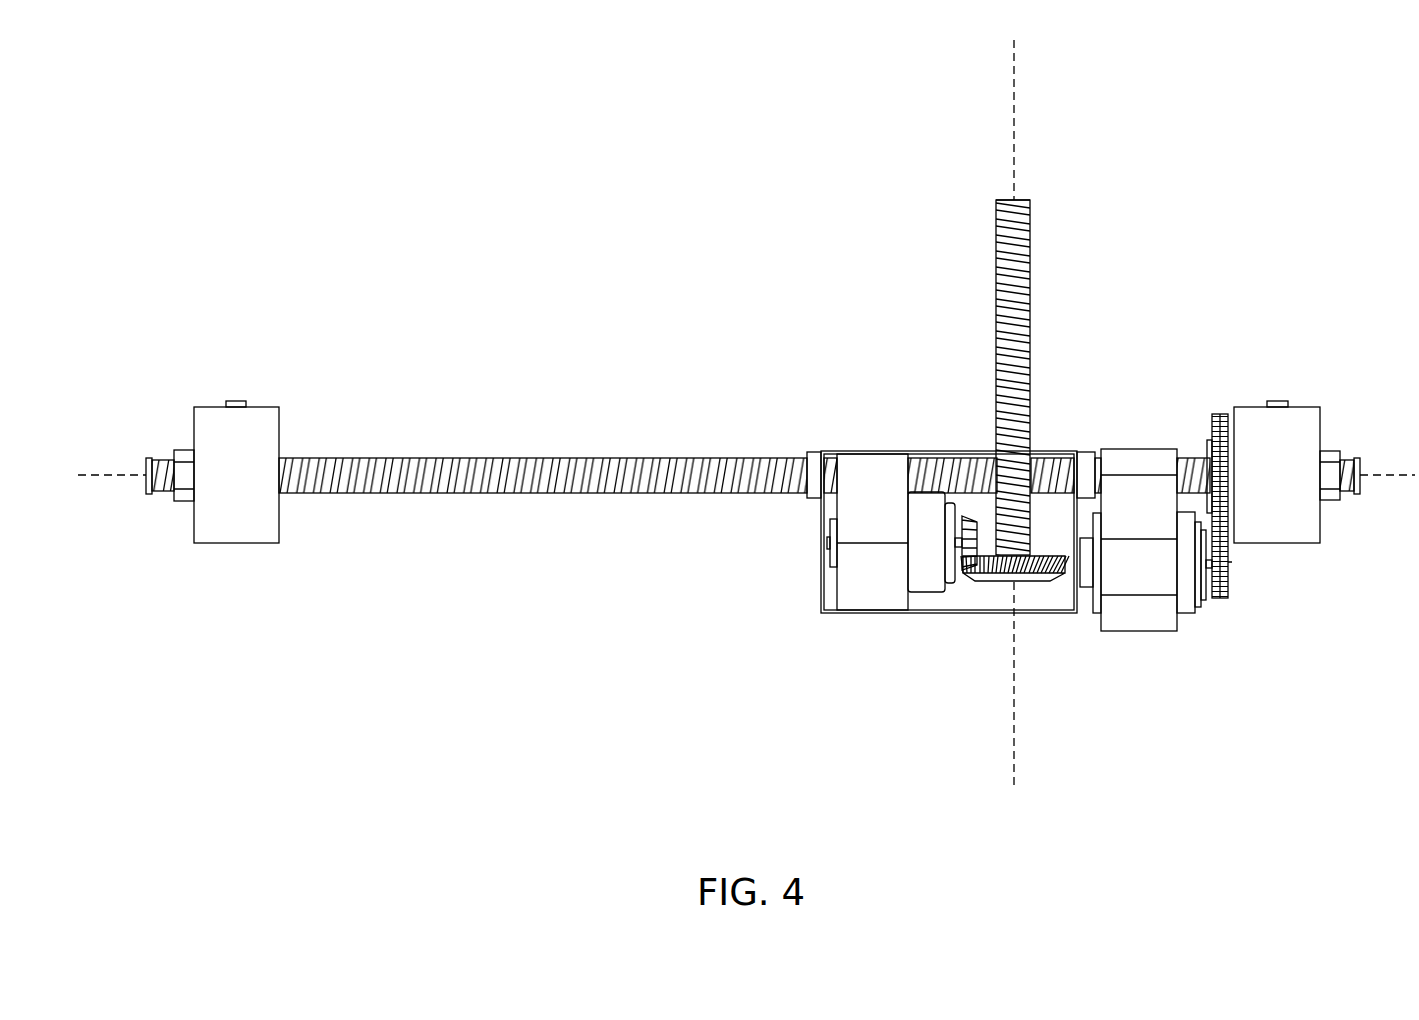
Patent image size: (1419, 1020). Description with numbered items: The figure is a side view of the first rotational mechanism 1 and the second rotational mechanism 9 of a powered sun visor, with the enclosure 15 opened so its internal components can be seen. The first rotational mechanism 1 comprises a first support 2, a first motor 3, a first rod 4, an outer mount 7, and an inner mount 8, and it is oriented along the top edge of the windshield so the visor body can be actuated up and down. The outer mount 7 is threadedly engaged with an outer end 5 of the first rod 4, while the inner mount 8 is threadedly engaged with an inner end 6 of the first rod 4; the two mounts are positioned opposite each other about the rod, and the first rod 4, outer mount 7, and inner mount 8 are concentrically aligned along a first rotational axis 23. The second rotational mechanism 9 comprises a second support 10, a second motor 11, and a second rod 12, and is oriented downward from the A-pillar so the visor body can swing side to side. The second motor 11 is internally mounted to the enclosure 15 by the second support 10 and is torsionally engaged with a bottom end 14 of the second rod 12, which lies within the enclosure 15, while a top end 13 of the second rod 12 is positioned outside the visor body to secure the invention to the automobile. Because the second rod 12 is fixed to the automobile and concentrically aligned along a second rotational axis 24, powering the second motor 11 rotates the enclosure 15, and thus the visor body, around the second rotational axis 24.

The first rotational mechanism 1 is at (973, 488).
The first support 2 is at (1130, 452).
The first motor 3 is at (1183, 612).
The first rod 4 is at (518, 493).
The outer end 5 is at (1367, 488).
The inner end 6 is at (136, 489).
The outer mount 7 is at (1285, 544).
The inner mount 8 is at (240, 543).
The second rotational mechanism 9 is at (756, 520).
The second support 10 is at (863, 600).
The second motor 11 is at (923, 591).
The second rod 12 is at (1031, 338).
The top end 13 is at (1042, 205).
The bottom end 14 is at (1038, 545).
The enclosure 15 is at (881, 451).
The first rotational axis 23 is at (118, 471).
The second rotational axis 24 is at (1014, 160).